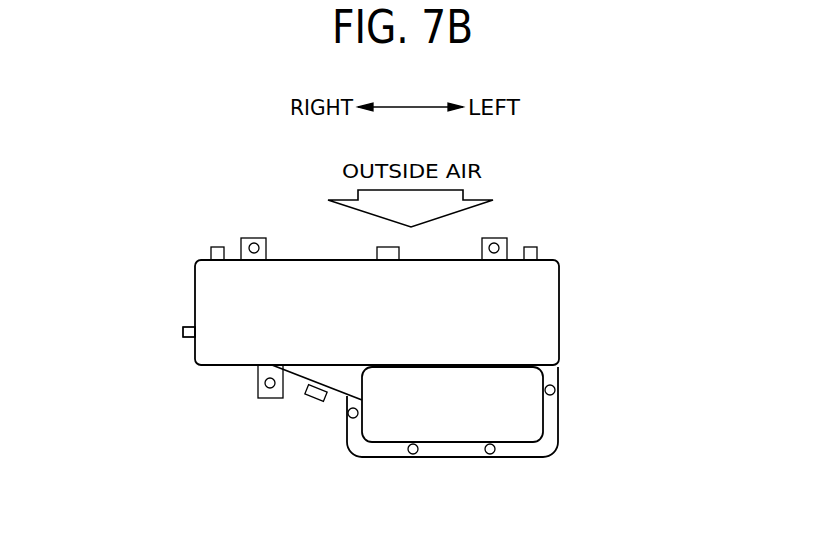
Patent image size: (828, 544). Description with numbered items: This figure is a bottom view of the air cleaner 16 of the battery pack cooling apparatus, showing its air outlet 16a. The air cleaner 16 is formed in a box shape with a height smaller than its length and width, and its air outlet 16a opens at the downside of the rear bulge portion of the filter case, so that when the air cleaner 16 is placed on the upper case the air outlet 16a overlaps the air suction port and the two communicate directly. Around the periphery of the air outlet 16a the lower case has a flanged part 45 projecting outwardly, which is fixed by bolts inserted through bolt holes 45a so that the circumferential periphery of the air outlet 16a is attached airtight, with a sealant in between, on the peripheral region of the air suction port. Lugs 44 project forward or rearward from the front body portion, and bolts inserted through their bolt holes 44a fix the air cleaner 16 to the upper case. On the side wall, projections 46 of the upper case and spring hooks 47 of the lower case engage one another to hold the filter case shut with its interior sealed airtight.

The air cleaner 16 is at (405, 328).
The air outlet 16a is at (413, 412).
The lug 44 is at (267, 399).
The bolt hole 44a is at (254, 243).
The flanged part 45 is at (453, 448).
The bolt hole 45a is at (488, 455).
The projection 46 is at (183, 329).
The spring hook 47 is at (189, 332).